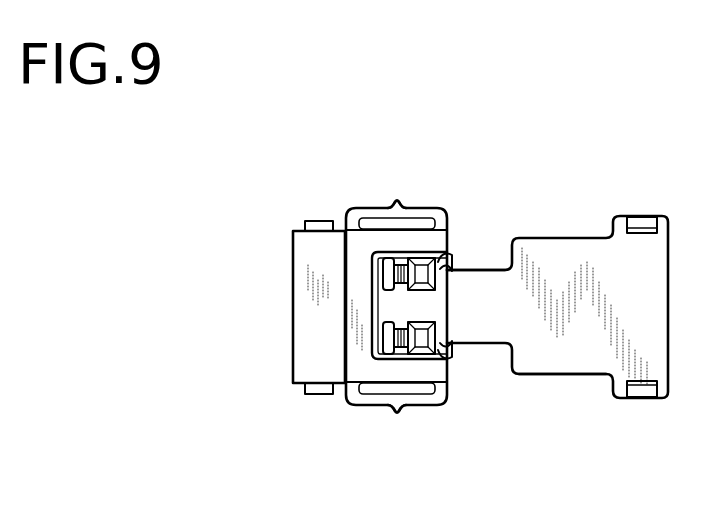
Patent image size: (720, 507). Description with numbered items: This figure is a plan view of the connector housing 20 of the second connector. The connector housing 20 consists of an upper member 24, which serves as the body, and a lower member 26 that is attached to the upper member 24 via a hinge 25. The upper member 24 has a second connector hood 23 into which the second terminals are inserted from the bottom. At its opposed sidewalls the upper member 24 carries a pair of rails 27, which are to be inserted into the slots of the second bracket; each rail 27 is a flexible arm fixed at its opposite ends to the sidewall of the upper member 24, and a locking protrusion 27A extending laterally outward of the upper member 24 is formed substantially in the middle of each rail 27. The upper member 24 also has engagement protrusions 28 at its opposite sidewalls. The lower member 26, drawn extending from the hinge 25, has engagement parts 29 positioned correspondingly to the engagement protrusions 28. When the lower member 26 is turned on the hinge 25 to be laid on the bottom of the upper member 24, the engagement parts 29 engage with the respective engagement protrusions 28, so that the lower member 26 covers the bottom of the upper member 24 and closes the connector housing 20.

The connector housing 20 is at (540, 199).
The second connector hood 23 is at (373, 312).
The upper member 24 is at (293, 267).
The hinge 25 is at (481, 269).
The lower member 26 is at (548, 375).
The rail 27 is at (370, 208).
The locking protrusion 27A is at (403, 200).
The engagement protrusion 28 is at (322, 221).
The engagement part 29 is at (641, 217).